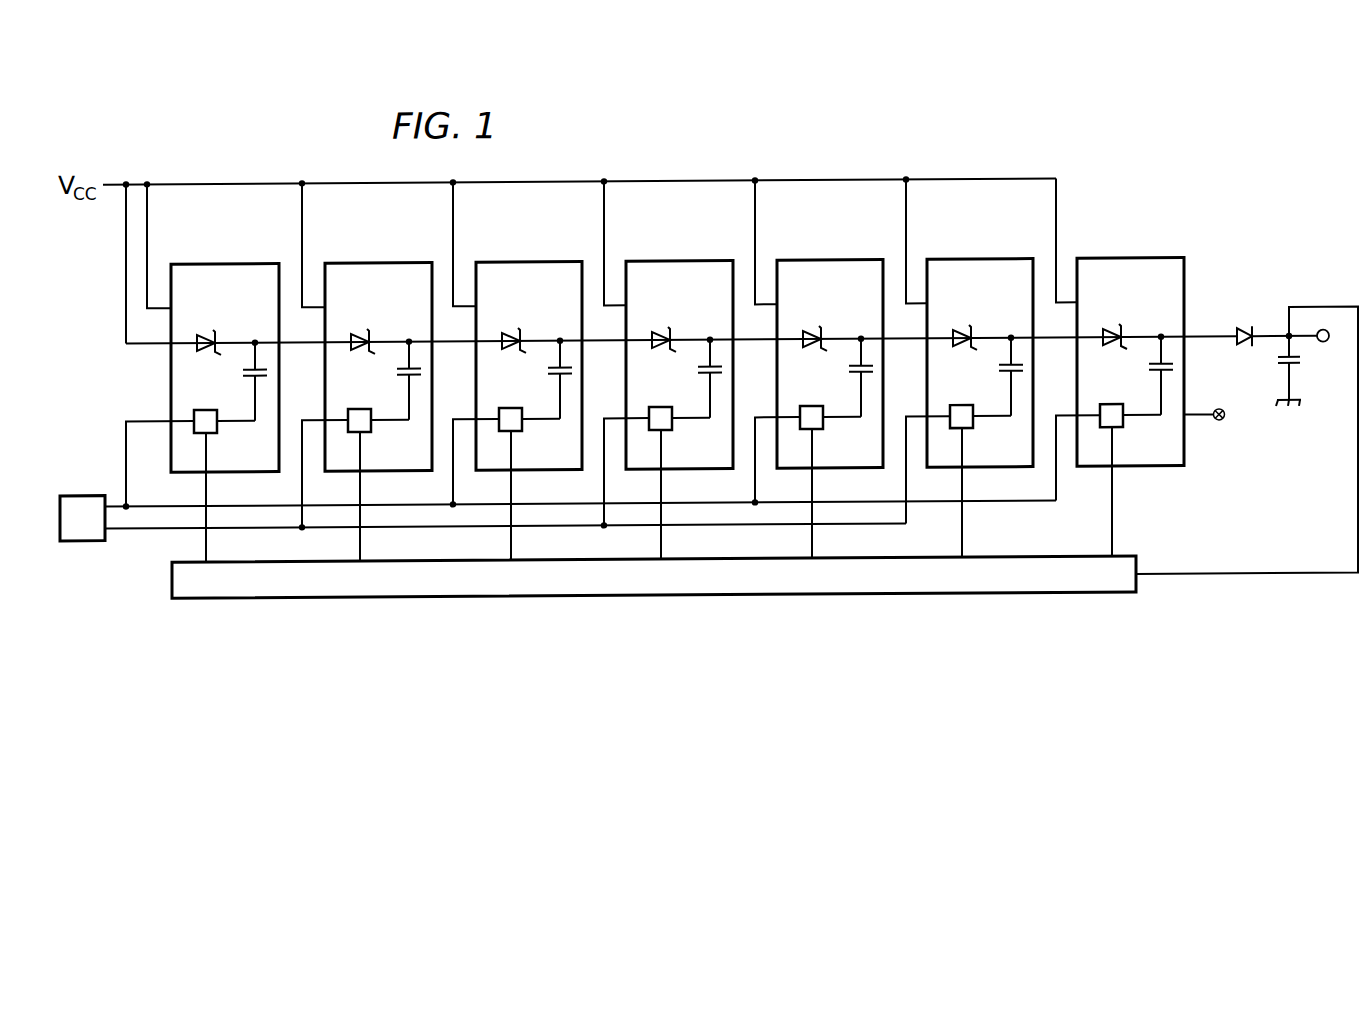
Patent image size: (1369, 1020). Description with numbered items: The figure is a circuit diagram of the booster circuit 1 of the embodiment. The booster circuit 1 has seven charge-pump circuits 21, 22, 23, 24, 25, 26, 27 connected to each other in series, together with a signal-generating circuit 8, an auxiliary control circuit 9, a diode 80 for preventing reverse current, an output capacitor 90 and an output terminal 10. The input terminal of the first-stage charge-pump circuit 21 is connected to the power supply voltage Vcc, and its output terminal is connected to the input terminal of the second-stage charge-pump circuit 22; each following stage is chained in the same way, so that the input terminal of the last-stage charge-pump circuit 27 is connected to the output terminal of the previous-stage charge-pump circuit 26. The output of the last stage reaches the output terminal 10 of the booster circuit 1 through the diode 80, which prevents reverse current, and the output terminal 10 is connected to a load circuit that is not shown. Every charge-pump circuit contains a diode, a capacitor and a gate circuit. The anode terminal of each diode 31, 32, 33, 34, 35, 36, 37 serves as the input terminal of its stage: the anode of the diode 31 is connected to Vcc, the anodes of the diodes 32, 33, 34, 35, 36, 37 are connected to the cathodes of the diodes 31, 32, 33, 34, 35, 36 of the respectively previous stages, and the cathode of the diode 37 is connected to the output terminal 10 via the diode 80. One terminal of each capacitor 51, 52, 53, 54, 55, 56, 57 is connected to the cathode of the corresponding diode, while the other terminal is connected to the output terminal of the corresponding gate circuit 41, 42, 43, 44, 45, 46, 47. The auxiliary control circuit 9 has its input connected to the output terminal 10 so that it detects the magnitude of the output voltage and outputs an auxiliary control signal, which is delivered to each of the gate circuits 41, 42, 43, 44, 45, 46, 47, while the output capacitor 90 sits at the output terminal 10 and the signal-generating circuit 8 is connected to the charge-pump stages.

The booster circuit 1 is at (707, 158).
The charge-pump circuit of the first stage 21 is at (226, 264).
The charge-pump circuit of the second stage 22 is at (380, 264).
The charge-pump circuit 23 is at (531, 264).
The charge-pump circuit 24 is at (681, 264).
The charge-pump circuit 25 is at (832, 264).
The charge-pump circuit 26 is at (982, 264).
The charge-pump circuit of the last stage 27 is at (1132, 264).
The diode 31 is at (209, 334).
The diode 32 is at (363, 334).
The diode 33 is at (514, 334).
The diode 34 is at (664, 334).
The diode 35 is at (815, 334).
The diode 36 is at (965, 334).
The diode 37 is at (1115, 334).
The gate circuit 41 is at (217, 430).
The gate circuit 42 is at (371, 430).
The gate circuit 43 is at (522, 430).
The gate circuit 44 is at (672, 430).
The gate circuit 45 is at (823, 430).
The gate circuit 46 is at (973, 430).
The gate circuit 47 is at (1123, 430).
The capacitor 51 is at (243, 373).
The capacitor 52 is at (397, 373).
The capacitor 53 is at (548, 373).
The capacitor 54 is at (698, 373).
The capacitor 55 is at (849, 373).
The capacitor 56 is at (999, 373).
The capacitor 57 is at (1149, 373).
The signal-generating circuit 8 is at (83, 540).
The auxiliary control circuit 9 is at (655, 598).
The output terminal 10 is at (1325, 350).
The diode for preventing reverse current 80 is at (1246, 333).
The output capacitor 90 is at (1276, 372).